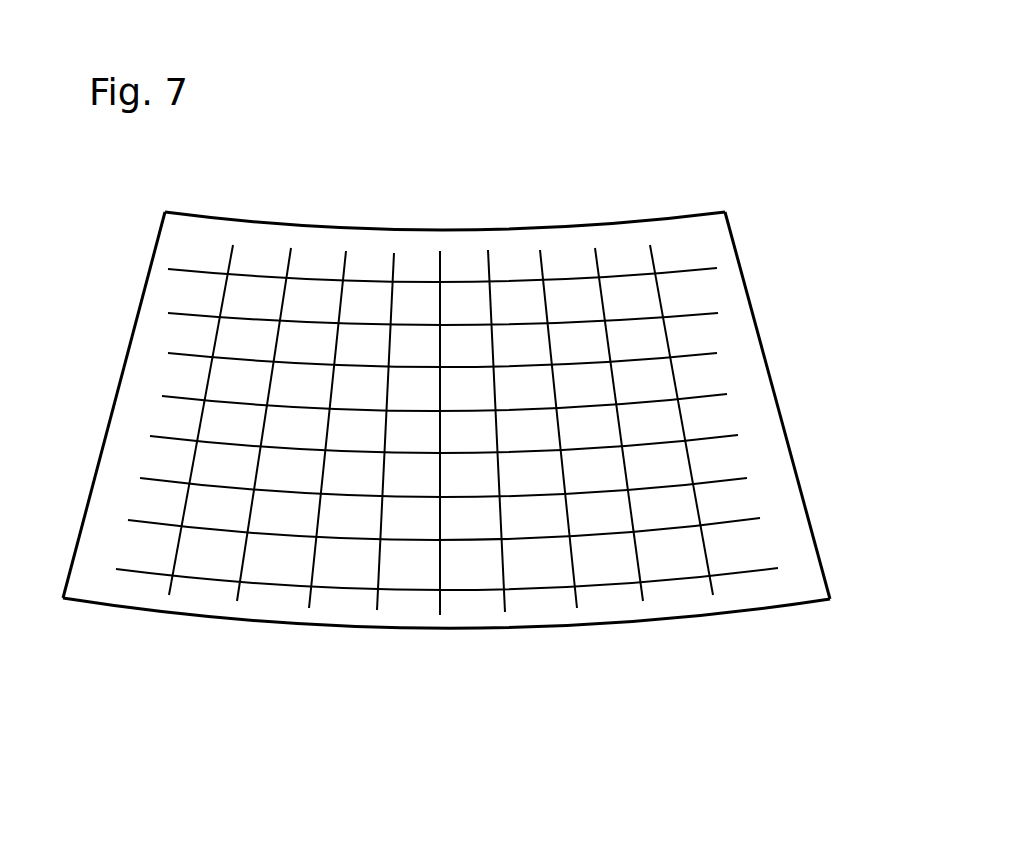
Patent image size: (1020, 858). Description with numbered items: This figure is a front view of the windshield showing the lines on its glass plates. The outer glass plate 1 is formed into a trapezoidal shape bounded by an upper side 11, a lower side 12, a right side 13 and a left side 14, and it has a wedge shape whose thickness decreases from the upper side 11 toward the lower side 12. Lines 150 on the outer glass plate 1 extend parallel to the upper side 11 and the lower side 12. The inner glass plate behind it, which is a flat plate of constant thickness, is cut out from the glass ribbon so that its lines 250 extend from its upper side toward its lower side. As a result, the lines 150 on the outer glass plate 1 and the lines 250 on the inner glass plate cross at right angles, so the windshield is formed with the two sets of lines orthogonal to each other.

The outer glass plate 1 is at (463, 446).
The upper side 11 is at (383, 229).
The lower side 12 is at (413, 630).
The right side 13 is at (787, 450).
The left side 14 is at (125, 354).
The lines on the outer glass plate 150 is at (722, 269).
The lines on the inner glass plate 250 is at (643, 603).